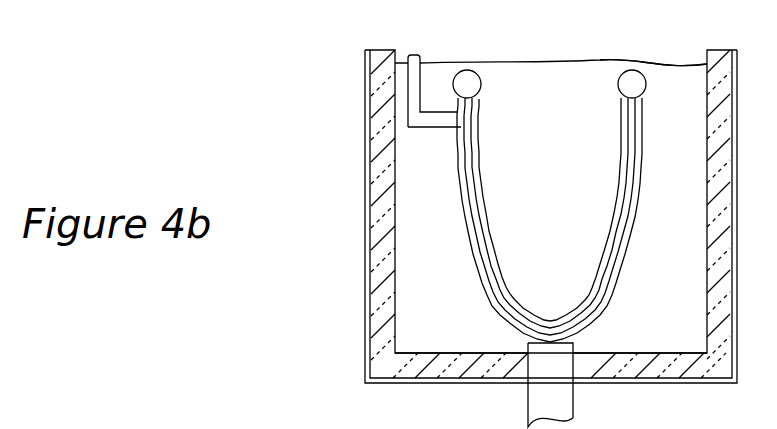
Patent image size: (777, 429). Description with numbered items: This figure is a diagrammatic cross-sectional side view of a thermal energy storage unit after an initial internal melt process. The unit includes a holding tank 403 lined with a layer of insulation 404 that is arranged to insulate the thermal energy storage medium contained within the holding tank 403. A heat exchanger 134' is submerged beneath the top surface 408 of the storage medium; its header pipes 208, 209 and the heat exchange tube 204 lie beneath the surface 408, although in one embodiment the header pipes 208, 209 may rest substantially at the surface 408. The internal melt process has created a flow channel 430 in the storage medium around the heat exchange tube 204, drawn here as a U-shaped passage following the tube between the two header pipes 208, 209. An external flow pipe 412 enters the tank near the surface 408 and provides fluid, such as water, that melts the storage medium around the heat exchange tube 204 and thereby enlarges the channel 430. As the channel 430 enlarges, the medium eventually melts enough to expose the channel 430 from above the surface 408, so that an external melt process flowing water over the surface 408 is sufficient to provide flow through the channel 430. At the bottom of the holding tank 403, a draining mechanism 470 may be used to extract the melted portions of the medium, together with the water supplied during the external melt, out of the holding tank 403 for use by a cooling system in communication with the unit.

The external flow pipe 412 is at (421, 90).
The header pipe 208 is at (470, 84).
The top surface 408 is at (604, 60).
The header pipe 209 is at (627, 82).
The heat exchanger 134' is at (671, 44).
The heat exchange tube 204 is at (633, 186).
The flow channel 430 is at (622, 258).
The holding tank 403 is at (367, 384).
The layer of insulation 404 is at (410, 383).
The draining mechanism 470 is at (557, 399).